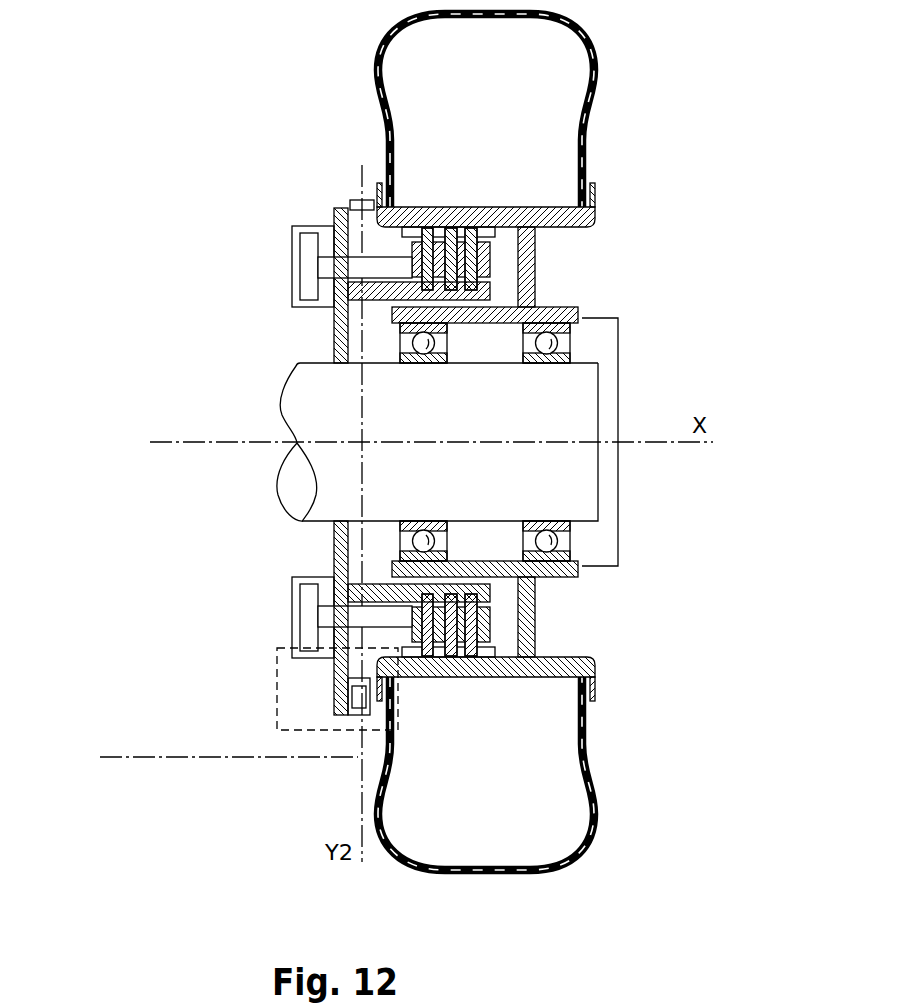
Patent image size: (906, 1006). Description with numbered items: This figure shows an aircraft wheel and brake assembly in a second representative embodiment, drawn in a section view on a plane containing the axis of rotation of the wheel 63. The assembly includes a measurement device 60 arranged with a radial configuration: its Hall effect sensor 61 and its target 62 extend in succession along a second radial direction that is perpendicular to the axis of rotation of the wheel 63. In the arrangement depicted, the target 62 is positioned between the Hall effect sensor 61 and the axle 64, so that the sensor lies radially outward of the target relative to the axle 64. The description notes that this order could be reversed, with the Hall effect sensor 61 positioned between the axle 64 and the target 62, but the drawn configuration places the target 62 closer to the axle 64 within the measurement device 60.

The measurement device 60 is at (276, 689).
The Hall effect sensor 61 is at (343, 712).
The target 62 is at (358, 205).
The wheel 63 is at (638, 140).
The axle 64 is at (322, 362).